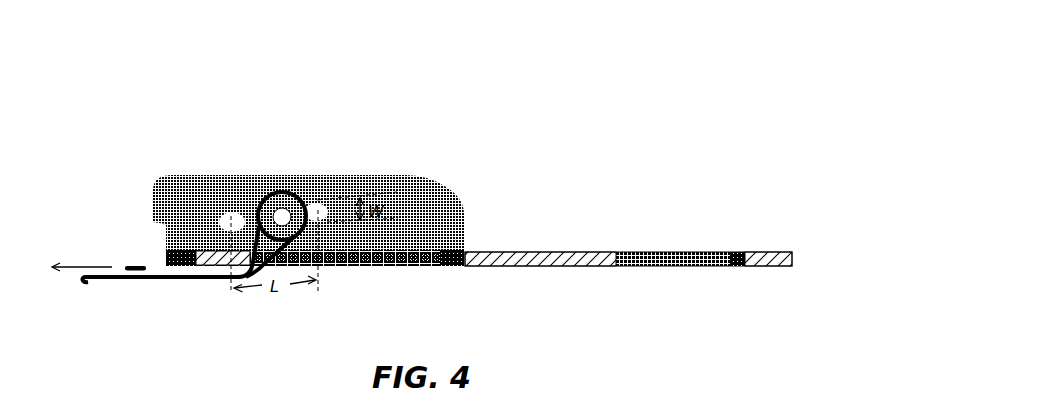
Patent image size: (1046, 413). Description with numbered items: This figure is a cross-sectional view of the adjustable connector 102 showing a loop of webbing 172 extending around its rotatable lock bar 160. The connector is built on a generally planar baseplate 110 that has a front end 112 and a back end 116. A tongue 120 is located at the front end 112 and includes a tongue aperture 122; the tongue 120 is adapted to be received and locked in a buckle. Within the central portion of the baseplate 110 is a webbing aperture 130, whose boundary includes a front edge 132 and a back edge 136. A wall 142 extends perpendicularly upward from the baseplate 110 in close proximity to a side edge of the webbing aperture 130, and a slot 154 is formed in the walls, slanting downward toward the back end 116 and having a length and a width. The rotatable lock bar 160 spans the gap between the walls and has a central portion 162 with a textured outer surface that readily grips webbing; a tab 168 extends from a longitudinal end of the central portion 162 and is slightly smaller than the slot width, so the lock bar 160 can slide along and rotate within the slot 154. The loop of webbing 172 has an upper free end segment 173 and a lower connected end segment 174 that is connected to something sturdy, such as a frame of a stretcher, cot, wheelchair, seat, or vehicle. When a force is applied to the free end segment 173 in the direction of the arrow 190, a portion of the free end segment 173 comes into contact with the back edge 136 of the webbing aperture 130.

The adjustable connector 102 is at (110, 98).
The baseplate 110 is at (462, 250).
The front end 112 is at (793, 262).
The back end 116 is at (160, 247).
The tongue 120 is at (768, 252).
The tongue aperture 122 is at (678, 276).
The webbing aperture 130 is at (362, 286).
The front edge 132 is at (471, 252).
The back edge 136 is at (255, 258).
The wall 142 is at (373, 176).
The slot 154 is at (316, 197).
The rotatable lock bar 160 is at (281, 156).
The central portion 162 is at (282, 213).
The tab 168 is at (282, 190).
The loop of webbing 172 is at (297, 185).
The upper free end segment 173 is at (139, 264).
The lower connected end segment 174 is at (93, 284).
The arrow 190 is at (112, 267).